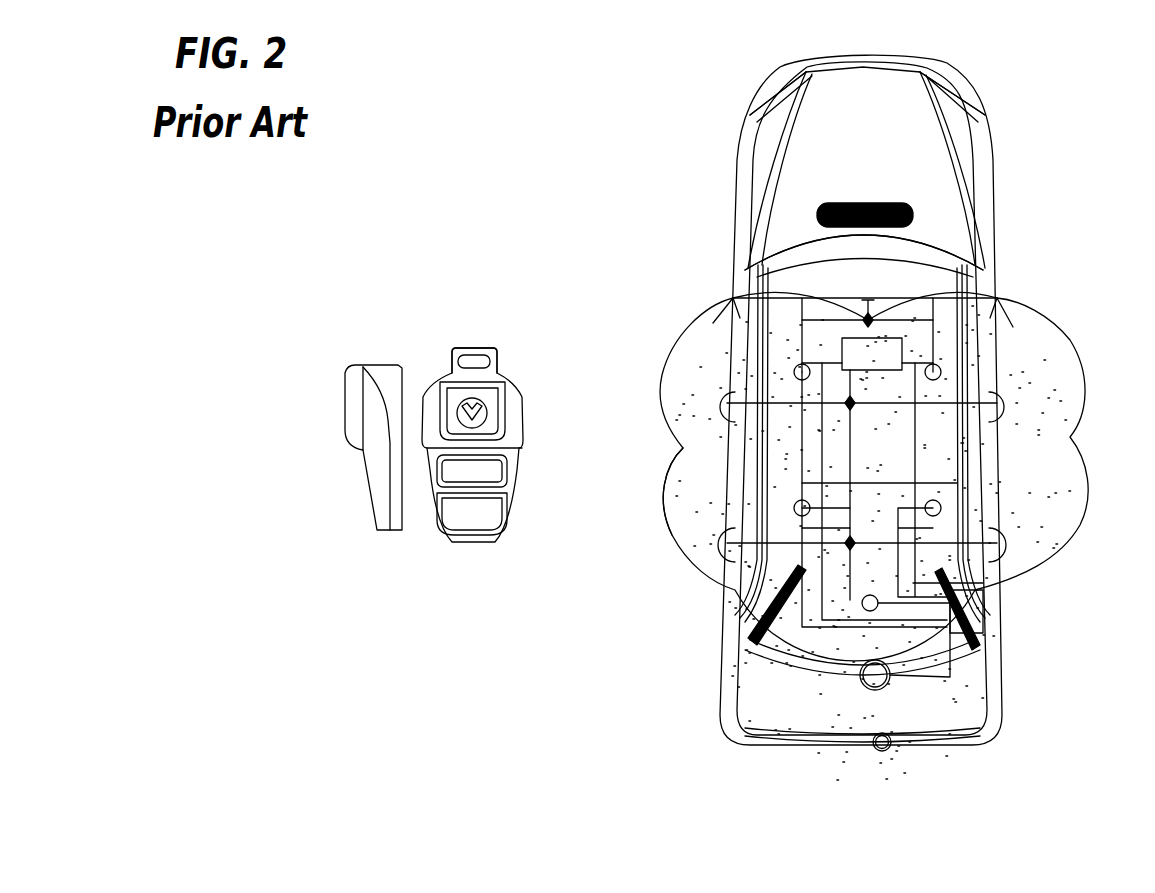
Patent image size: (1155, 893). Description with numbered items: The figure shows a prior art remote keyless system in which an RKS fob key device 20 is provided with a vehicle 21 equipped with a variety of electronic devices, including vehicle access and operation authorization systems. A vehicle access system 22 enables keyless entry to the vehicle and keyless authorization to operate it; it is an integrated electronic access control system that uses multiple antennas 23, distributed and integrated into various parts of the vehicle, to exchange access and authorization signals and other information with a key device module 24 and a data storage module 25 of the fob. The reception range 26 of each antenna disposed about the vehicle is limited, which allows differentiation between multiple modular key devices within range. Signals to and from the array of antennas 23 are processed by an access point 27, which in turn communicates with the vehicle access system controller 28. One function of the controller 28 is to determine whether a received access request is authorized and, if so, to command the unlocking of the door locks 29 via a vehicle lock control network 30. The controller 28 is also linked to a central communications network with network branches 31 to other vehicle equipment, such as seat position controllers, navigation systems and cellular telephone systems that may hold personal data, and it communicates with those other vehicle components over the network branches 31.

The RKS fob key device 20 is at (434, 476).
The vehicle 21 is at (737, 140).
The vehicle access system 22 is at (1136, 459).
The antennas 23 is at (787, 527).
The key device module 24 is at (445, 537).
The data storage module 25 is at (497, 347).
The reception range 26 is at (1040, 493).
The access point 27 is at (992, 607).
The vehicle access system controller 28 is at (927, 338).
The door locks 29 is at (663, 377).
The vehicle lock control network 30 is at (878, 418).
The network branches 31 is at (858, 285).